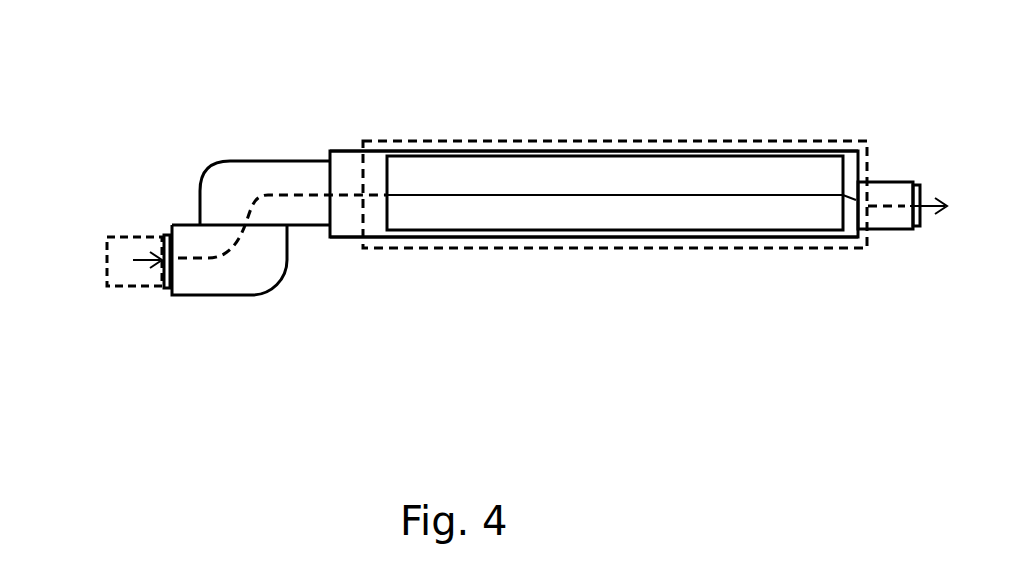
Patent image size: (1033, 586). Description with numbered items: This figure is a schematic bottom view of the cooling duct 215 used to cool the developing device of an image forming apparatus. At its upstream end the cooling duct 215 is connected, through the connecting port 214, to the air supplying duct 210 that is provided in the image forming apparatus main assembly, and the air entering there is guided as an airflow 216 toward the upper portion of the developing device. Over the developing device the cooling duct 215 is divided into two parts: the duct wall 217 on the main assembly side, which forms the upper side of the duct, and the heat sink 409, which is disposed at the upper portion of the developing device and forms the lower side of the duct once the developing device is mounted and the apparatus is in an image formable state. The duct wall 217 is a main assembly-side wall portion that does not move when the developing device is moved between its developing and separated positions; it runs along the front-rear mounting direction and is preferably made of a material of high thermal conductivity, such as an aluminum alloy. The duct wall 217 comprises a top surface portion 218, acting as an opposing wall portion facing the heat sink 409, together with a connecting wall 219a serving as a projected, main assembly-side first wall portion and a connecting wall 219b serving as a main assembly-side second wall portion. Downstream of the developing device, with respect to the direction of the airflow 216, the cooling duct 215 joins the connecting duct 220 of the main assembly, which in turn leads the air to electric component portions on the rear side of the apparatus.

The air supplying duct 210 is at (122, 288).
The connecting port 214 is at (162, 236).
The cooling duct 215 is at (375, 105).
The airflow 216 is at (200, 260).
The duct wall 217 is at (623, 170).
The top surface portion 218 is at (585, 175).
The connecting wall 219a is at (728, 237).
The connecting wall 219b is at (729, 150).
The heat sink 409 is at (522, 248).
The connecting duct 220 is at (882, 229).